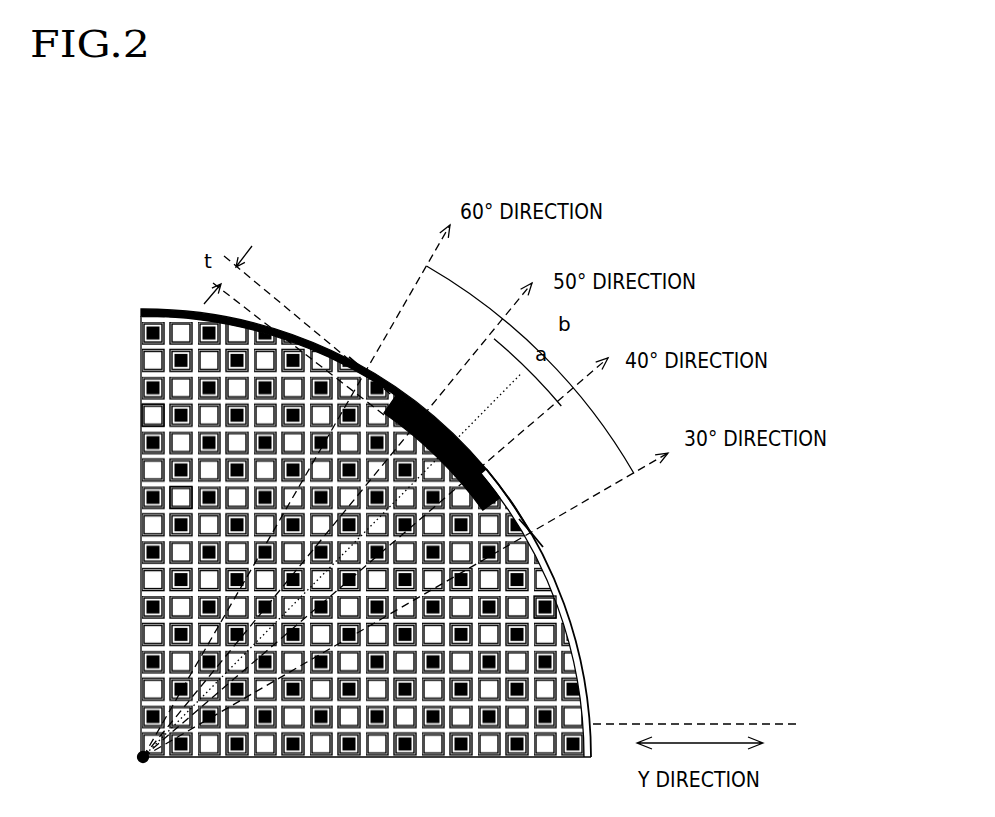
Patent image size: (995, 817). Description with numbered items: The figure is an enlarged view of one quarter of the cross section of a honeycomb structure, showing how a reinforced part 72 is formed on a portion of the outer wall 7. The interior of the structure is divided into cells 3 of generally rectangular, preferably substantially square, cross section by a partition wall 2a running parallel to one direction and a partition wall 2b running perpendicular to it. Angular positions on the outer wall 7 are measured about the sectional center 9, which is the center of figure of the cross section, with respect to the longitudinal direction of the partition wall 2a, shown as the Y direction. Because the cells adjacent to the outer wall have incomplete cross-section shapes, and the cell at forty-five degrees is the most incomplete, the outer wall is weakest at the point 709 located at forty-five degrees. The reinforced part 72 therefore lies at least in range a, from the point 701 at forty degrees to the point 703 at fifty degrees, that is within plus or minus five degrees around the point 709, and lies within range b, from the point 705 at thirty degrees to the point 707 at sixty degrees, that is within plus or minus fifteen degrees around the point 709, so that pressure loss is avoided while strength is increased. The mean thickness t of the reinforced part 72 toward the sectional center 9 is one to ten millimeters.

The partition wall 2a is at (420, 730).
The partition wall 2b is at (163, 415).
The cell 3 is at (185, 500).
The outer wall 7 is at (583, 663).
The sectional center 9 is at (146, 759).
The reinforced part 72 is at (537, 595).
The point located at 40° 701 is at (487, 470).
The point located at 50° 703 is at (430, 410).
The point located at 30° 705 is at (531, 534).
The point located at 60° 707 is at (363, 372).
The point located at 45° 709 is at (463, 435).